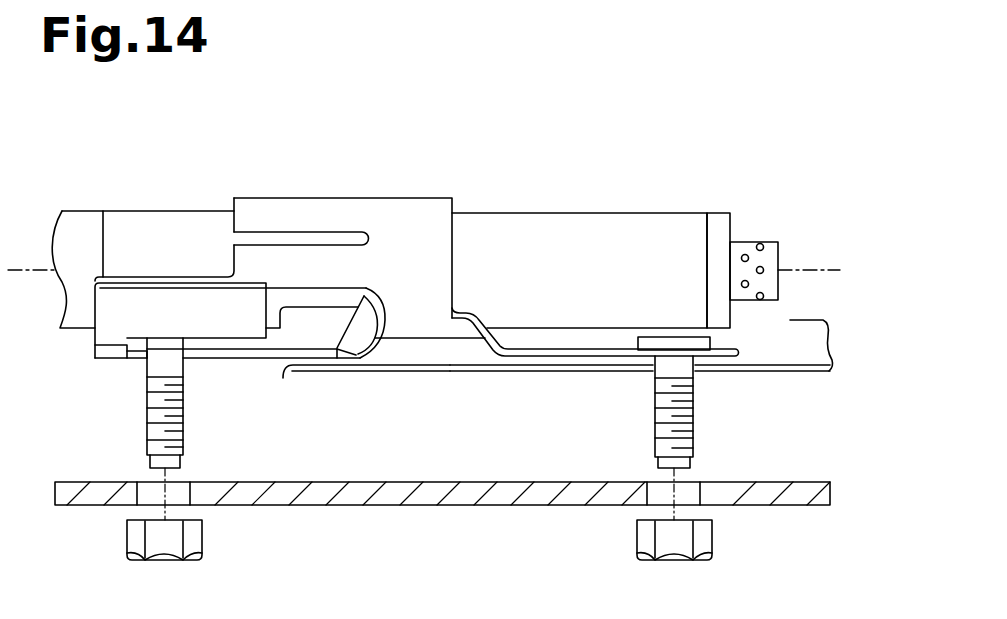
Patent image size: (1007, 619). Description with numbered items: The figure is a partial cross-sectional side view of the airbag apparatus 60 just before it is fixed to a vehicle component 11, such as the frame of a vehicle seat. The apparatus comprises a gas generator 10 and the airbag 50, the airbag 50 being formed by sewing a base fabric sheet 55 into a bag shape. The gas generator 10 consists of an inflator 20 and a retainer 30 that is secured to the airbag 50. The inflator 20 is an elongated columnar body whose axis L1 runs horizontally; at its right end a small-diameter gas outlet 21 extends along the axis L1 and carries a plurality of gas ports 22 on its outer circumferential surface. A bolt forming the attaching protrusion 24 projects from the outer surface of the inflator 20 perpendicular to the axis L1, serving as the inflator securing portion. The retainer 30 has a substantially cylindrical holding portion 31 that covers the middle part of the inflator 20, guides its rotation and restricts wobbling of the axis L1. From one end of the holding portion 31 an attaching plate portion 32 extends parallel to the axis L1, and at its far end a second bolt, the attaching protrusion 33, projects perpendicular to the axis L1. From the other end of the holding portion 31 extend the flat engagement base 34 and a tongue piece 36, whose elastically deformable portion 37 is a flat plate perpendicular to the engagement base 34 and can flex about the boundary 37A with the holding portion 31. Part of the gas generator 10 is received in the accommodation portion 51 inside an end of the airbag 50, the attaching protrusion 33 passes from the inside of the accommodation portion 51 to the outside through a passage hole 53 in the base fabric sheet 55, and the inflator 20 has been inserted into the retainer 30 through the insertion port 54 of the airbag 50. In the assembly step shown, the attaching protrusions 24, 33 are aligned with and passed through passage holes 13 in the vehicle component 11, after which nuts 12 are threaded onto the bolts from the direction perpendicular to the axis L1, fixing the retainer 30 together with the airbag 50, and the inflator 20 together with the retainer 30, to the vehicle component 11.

The gas generator 10 is at (658, 149).
The airbag apparatus 60 is at (459, 301).
The vehicle component 11 is at (437, 502).
The nut 12 is at (203, 538).
The passage hole 13 is at (180, 480).
The inflator 20 is at (558, 218).
The gas outlet 21 is at (740, 242).
The gas port 22 is at (742, 292).
The attaching protrusion 24 is at (144, 433).
The retainer 30 is at (277, 229).
The holding portion 31 is at (313, 208).
The attaching plate portion 32 is at (563, 350).
The attaching protrusion 33 is at (653, 445).
The engagement base 34 is at (213, 358).
The tongue piece 36 is at (218, 284).
The elastically deformable portion 37 is at (133, 283).
The boundary 37A is at (356, 264).
The airbag 50 is at (572, 361).
The accommodation portion 51 is at (811, 330).
The passage hole 53 is at (648, 356).
The insertion port 54 is at (282, 375).
The base fabric sheet 55 is at (787, 370).
The axis L1 is at (808, 268).